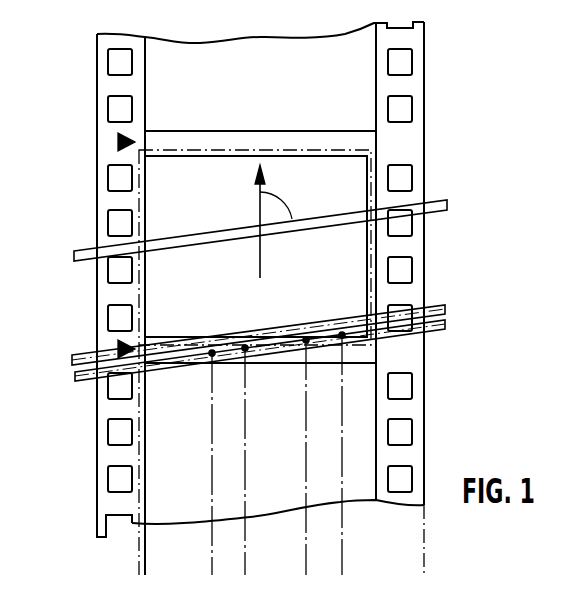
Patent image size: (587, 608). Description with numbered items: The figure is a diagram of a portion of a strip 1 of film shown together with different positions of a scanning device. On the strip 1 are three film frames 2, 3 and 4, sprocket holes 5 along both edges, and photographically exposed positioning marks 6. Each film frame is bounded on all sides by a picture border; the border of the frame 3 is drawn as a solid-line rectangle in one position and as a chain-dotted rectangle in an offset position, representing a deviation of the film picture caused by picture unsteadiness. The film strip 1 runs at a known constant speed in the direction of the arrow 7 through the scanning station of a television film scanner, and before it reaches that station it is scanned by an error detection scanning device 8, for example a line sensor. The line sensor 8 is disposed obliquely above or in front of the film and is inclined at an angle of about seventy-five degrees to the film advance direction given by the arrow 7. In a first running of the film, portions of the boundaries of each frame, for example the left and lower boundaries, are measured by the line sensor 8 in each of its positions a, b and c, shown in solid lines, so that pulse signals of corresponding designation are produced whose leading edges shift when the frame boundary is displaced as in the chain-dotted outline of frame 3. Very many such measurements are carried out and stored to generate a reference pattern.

The strip of film 1 is at (418, 85).
The film frame 2 is at (327, 47).
The film frame 3 is at (374, 153).
The film frame 4 is at (358, 492).
The sprocket holes 5 is at (118, 62).
The photographically exposed positioning marks 6 is at (118, 142).
The arrow 7 is at (262, 187).
The error detection scanning device 8 is at (447, 208).
The position of the scanning device a is at (74, 258).
The position of the scanning device b is at (72, 362).
The position of the scanning device c is at (75, 376).